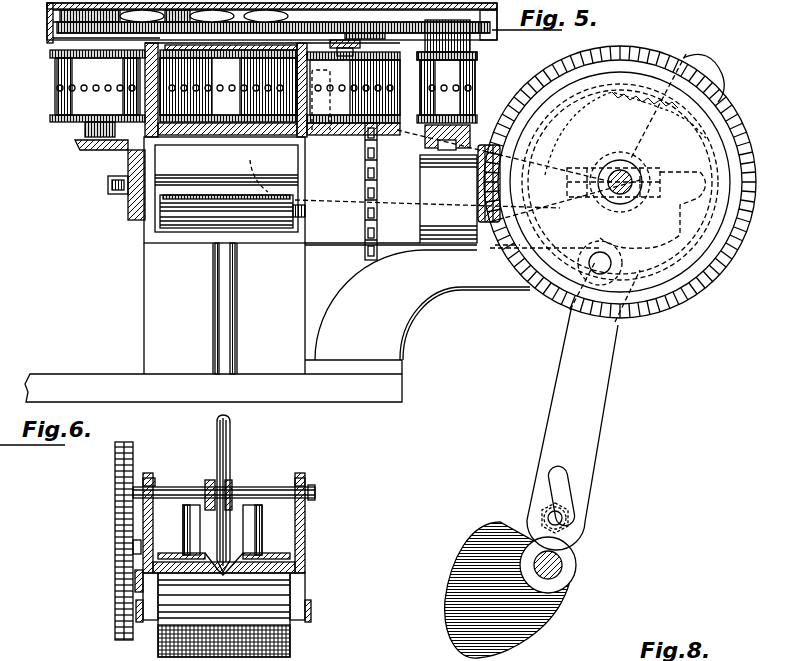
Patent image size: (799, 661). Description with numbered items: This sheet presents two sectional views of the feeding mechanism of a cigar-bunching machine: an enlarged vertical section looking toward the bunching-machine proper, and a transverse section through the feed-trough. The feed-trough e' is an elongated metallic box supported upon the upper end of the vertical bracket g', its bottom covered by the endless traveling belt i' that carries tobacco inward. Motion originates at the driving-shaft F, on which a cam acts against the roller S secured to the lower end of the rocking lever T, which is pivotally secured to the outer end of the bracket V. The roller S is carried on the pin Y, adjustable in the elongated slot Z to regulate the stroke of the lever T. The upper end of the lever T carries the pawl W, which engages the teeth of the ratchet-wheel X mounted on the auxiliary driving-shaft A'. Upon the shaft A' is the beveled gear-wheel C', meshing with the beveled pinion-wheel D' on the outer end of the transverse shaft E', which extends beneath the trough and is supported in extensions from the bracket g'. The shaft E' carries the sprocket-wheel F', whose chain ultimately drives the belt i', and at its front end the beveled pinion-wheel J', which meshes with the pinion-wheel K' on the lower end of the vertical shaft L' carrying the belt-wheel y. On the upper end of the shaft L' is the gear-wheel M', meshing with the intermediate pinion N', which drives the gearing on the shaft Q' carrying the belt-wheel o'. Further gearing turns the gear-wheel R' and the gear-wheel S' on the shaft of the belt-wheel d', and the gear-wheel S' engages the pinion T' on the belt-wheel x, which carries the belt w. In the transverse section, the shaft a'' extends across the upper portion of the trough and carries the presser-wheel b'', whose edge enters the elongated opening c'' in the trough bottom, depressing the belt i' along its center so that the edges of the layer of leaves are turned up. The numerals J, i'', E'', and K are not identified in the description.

In FIG. 5, the rack bar J is at (261, 21).
In FIG. 5, the gear-wheel M' is at (142, 16).
In FIG. 5, the intermediate pinion N' is at (212, 16).
In FIG. 5, the shaft Q' is at (266, 16).
In FIG. 5, the pinion T' is at (494, 23).
In FIG. 5, the gear-wheel R' is at (378, 37).
In FIG. 5, the gear-wheel S' is at (337, 48).
In FIG. 5, the belt-wheel y is at (97, 86).
In FIG. 5, the roller i'' is at (228, 86).
In FIG. 5, the belt-wheel d' is at (353, 91).
In FIG. 5, the belt-wheel x is at (477, 60).
In FIG. 5, the belt w is at (477, 80).
In FIG. 5, the vertical shaft L' is at (87, 132).
In FIG. 5, the beveled pinion-wheel K' is at (101, 154).
In FIG. 5, the beveled pinion-wheel J' is at (126, 194).
In FIG. 5, the transverse shaft E' is at (224, 190).
In FIG. 5, the feed-trough e' is at (260, 167).
In FIG. 6, the feed-trough e' is at (243, 540).
In FIG. 5, the endless traveling belt i' is at (232, 211).
In FIG. 6, the endless traveling belt i' is at (238, 523).
In FIG. 5, the sprocket-wheel F' is at (384, 191).
In FIG. 5, the frame box E'' is at (448, 199).
In FIG. 5, the vertical bracket g' is at (277, 322).
In FIG. 5, the bracket V is at (489, 211).
In FIG. 5, the beveled gear-wheel C' is at (620, 182).
In FIG. 5, the auxiliary driving-shaft A' is at (620, 173).
In FIG. 5, the beveled pinion-wheel D' is at (598, 208).
In FIG. 5, the ratchet-wheel X is at (625, 133).
In FIG. 5, the pawl W is at (677, 97).
In FIG. 5, the rocking lever T is at (583, 406).
In FIG. 5, the elongated slot Z is at (561, 496).
In FIG. 5, the roller S is at (542, 513).
In FIG. 5, the pin Y is at (566, 518).
In FIG. 5, the driving-shaft F is at (561, 565).
In FIG. 5, the cam K is at (508, 590).
In FIG. 6, the presser-wheel b'' is at (236, 493).
In FIG. 6, the transverse shaft a'' is at (224, 488).
In FIG. 6, the elongated opening c'' is at (223, 615).
In FIG. 6, the belt-wheel o' is at (278, 529).